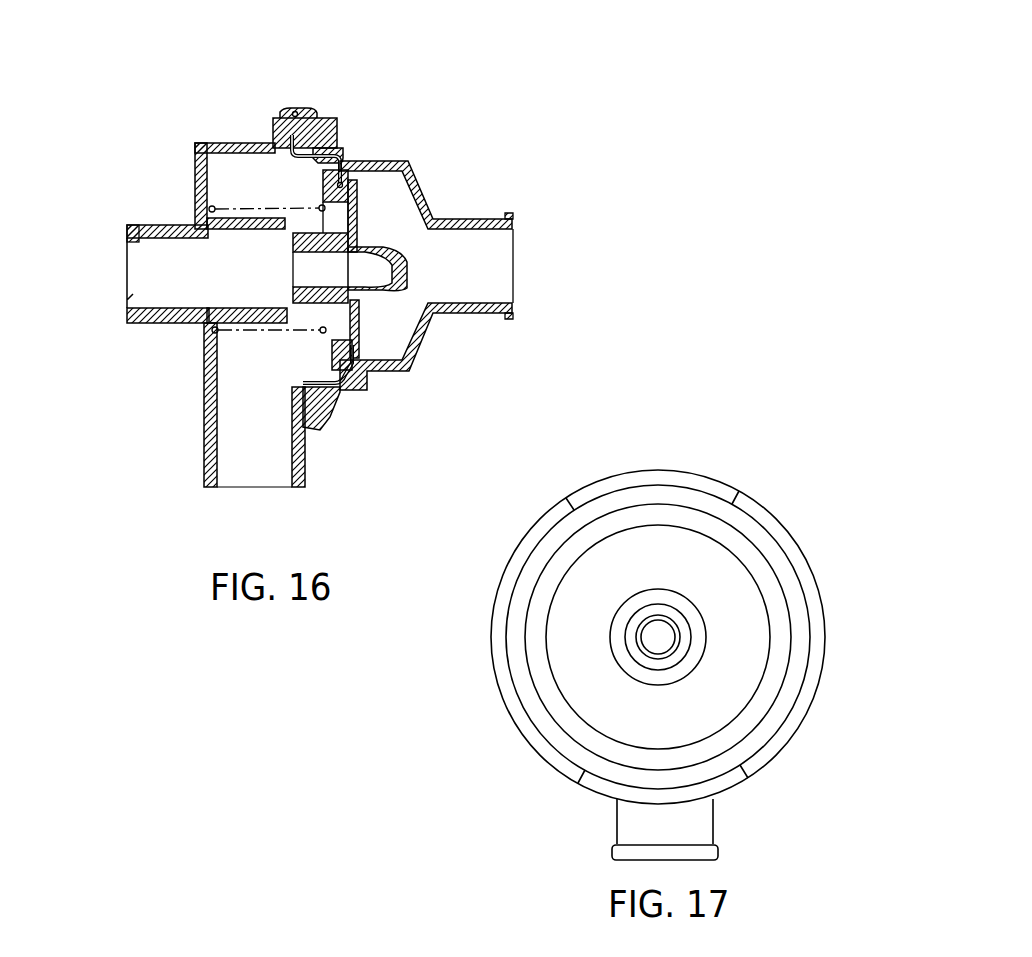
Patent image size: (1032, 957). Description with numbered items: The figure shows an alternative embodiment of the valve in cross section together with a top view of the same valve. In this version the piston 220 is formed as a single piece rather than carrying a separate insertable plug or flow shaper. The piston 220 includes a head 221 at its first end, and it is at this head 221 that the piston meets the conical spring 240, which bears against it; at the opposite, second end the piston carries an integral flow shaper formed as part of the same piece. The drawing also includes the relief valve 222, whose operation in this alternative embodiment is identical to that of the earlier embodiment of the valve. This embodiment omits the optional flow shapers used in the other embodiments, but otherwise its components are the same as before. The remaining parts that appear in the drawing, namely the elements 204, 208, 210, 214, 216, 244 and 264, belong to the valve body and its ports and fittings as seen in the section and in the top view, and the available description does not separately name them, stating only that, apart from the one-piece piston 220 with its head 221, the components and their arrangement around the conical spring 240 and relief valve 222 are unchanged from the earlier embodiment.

In FIG. 16, the housing outlet tube wall 204 is at (209, 432).
In FIG. 16, the outlet port 208 is at (513, 218).
In FIG. 17, the outlet port 208 is at (690, 598).
In FIG. 16, the adjustment nut 210 is at (340, 138).
In FIG. 16, the drain/outlet tube 214 is at (240, 462).
In FIG. 17, the drain/outlet tube 214 is at (703, 820).
In FIG. 16, the inlet tube 216 is at (135, 291).
In FIG. 16, the piston 220 is at (358, 248).
In FIG. 16, the head 221 is at (418, 248).
In FIG. 16, the relief valve 222 is at (390, 243).
In FIG. 16, the conical spring 240 is at (402, 287).
In FIG. 16, the clamp ring 244 is at (362, 368).
In FIG. 16, the housing chamber 264 is at (208, 348).